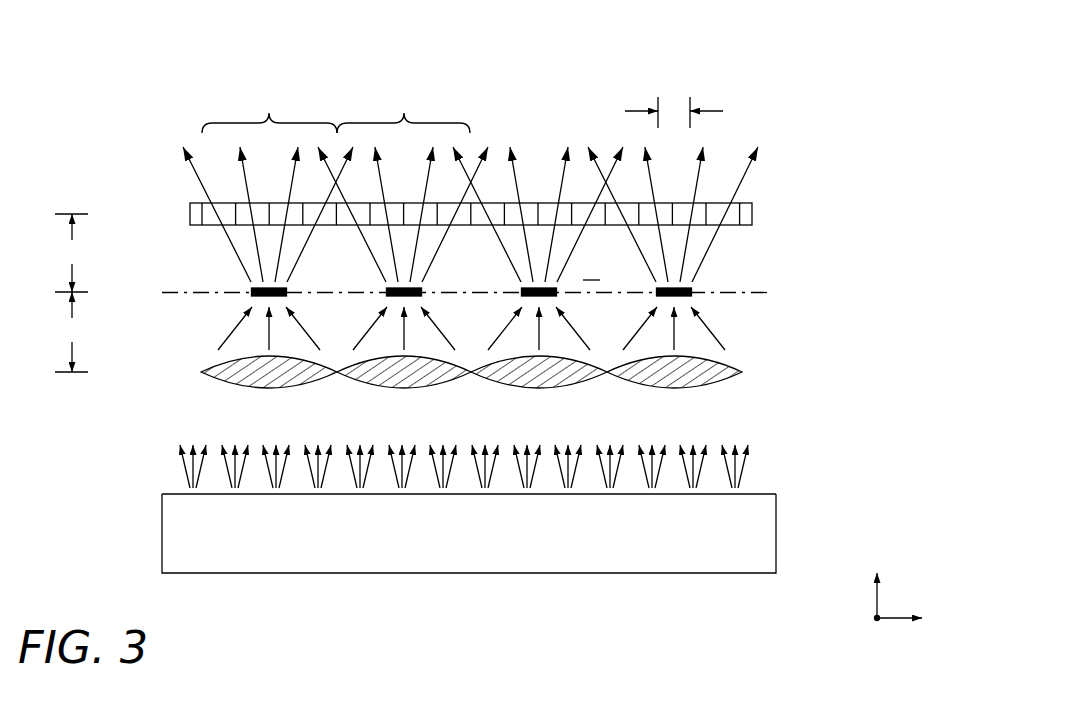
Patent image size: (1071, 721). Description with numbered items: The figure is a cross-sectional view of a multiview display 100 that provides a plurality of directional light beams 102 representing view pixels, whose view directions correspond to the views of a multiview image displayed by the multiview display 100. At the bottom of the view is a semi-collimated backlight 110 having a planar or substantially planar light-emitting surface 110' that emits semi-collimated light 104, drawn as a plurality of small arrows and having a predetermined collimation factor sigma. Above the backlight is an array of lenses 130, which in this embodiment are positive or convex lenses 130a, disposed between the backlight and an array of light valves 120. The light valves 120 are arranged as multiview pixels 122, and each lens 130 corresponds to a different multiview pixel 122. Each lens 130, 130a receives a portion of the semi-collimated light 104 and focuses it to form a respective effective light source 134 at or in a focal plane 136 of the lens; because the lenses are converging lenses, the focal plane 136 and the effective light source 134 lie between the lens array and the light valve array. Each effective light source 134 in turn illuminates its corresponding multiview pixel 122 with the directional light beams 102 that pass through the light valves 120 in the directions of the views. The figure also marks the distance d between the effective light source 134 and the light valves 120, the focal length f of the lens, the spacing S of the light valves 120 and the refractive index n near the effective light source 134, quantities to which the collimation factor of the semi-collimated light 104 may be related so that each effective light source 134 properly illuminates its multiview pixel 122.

The multiview display 100 is at (808, 80).
The directional light beams 102 is at (765, 170).
The light valves 120 is at (173, 208).
The multiview pixels 122 is at (336, 104).
The effective light source 134 is at (245, 280).
The focal plane 136 is at (197, 293).
The lenses 130 is at (558, 332).
The convex lenses 130a is at (753, 372).
The semi-collimated light 104 is at (775, 450).
The light-emitting surface 110' is at (511, 475).
The semi-collimated backlight 110 is at (516, 533).